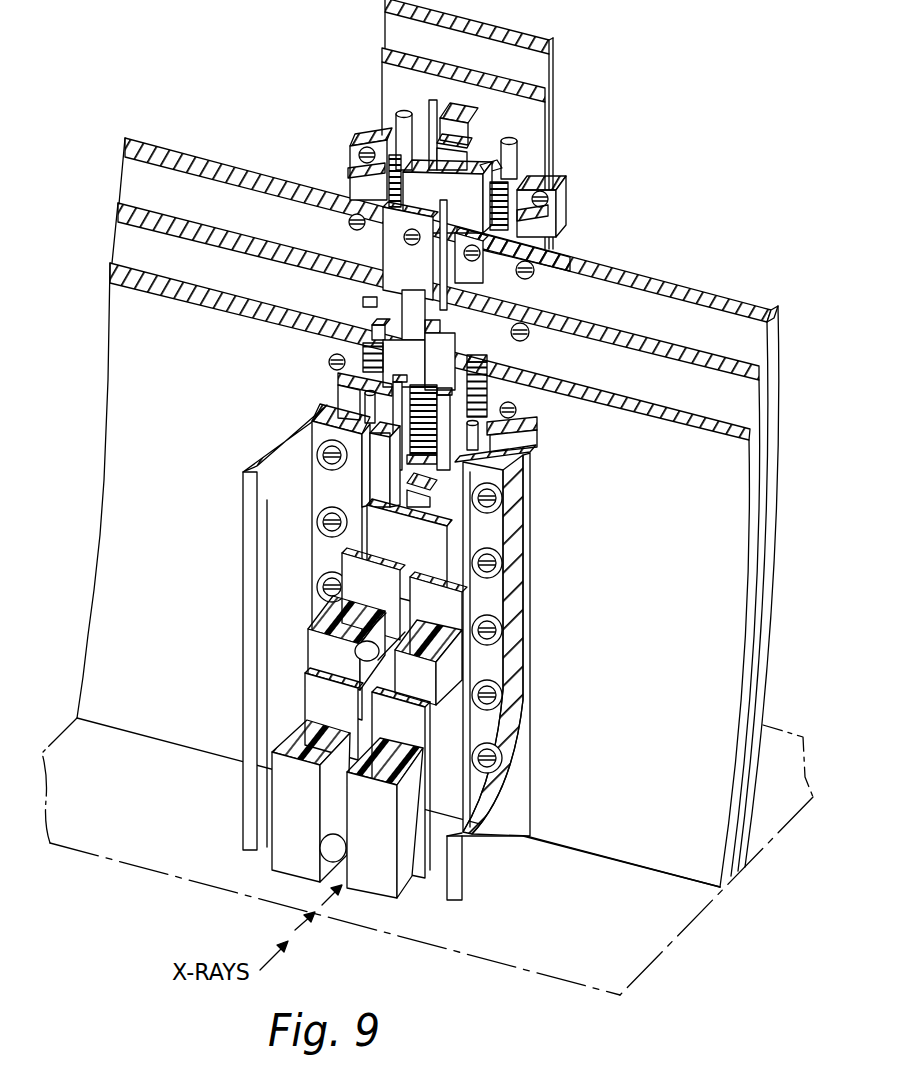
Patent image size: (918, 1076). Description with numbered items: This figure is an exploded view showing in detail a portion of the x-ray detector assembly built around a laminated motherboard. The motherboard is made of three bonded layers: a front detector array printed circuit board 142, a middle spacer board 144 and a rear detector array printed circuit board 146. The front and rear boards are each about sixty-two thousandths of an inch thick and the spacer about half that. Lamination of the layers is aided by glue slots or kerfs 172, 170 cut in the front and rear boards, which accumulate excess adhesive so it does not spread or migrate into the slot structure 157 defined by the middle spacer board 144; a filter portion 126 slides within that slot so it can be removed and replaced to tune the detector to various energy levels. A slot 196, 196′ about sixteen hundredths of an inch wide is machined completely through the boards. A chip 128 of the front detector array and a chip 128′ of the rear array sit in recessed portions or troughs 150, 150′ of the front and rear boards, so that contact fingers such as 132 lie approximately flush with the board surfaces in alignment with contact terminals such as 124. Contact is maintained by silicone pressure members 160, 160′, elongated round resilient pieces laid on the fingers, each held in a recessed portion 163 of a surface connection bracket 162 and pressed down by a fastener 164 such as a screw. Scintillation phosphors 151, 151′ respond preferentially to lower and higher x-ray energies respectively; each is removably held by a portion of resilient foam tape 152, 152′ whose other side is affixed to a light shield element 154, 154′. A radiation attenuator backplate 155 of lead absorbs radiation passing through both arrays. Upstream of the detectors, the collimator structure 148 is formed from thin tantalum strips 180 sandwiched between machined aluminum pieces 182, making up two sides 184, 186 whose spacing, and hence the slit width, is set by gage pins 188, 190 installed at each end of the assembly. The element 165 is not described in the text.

The contact terminal 124 is at (492, 372).
The filter portion 126 is at (367, 300).
The chip 128 is at (453, 370).
The chip 128′ is at (440, 194).
The contact finger 132 is at (490, 440).
The front detector array printed circuit board 142 is at (192, 322).
The middle spacer board 144 is at (194, 256).
The rear detector array printed circuit board 146 is at (192, 197).
The collimator structure 148 is at (275, 638).
The recessed portion 150 is at (329, 361).
The recessed portion 150′ is at (427, 148).
The scintillation phosphor 151 is at (510, 490).
The scintillation phosphor 151′ is at (442, 150).
The resilient foam tape 152 is at (430, 512).
The resilient foam tape 152′ is at (445, 125).
The light shield element 154 is at (362, 505).
The light shield element 154′ is at (545, 106).
The radiation attenuator backplate 155 is at (527, 30).
The slot structure 157 is at (387, 235).
The silicone pressure member 160 is at (522, 146).
The silicone pressure member 160′ is at (400, 126).
The surface connection bracket 162 is at (557, 193).
The recessed portion 163 is at (483, 163).
The fastener 164 is at (507, 523).
The spring 165 is at (510, 177).
The glue slot 170 is at (505, 268).
The glue slot 172 is at (485, 338).
The tantalum strip 180 is at (417, 722).
The aluminum piece 182 is at (320, 655).
The collimator side 184 is at (362, 908).
The collimator side 186 is at (283, 882).
The gage pin 188 is at (335, 840).
The gage pin 190 is at (368, 665).
The slot 196 is at (353, 390).
The slot 196′ is at (507, 230).